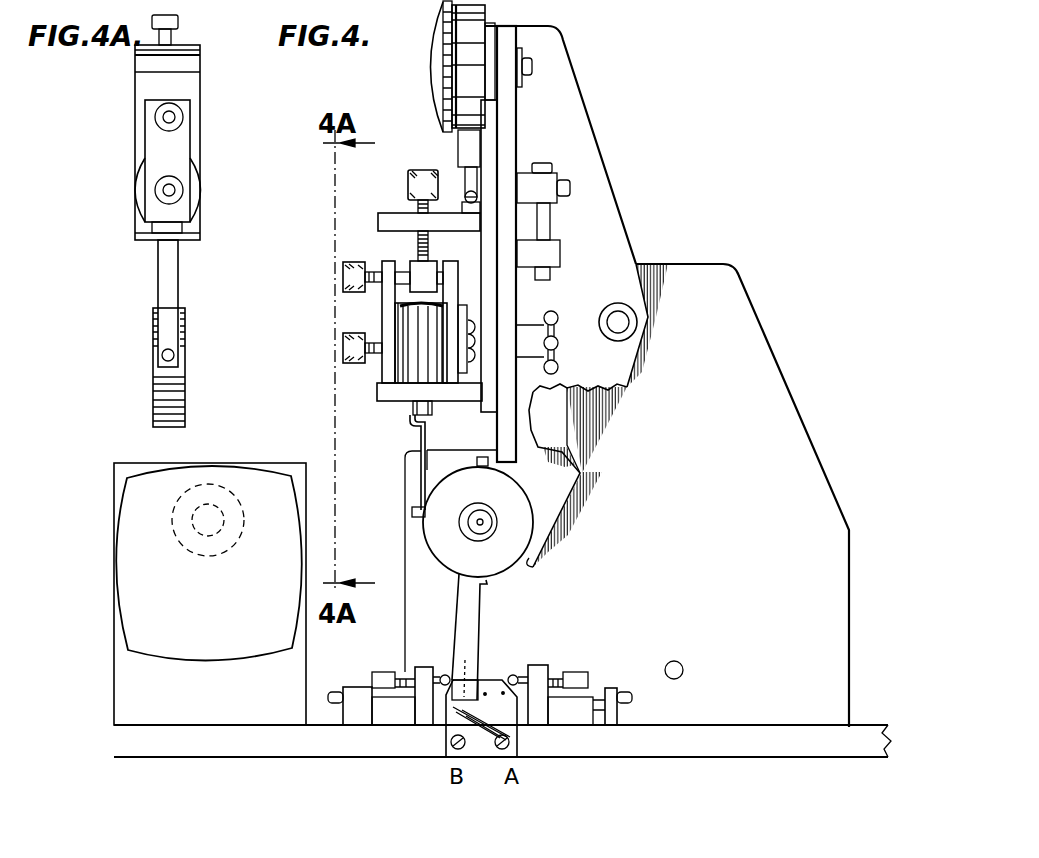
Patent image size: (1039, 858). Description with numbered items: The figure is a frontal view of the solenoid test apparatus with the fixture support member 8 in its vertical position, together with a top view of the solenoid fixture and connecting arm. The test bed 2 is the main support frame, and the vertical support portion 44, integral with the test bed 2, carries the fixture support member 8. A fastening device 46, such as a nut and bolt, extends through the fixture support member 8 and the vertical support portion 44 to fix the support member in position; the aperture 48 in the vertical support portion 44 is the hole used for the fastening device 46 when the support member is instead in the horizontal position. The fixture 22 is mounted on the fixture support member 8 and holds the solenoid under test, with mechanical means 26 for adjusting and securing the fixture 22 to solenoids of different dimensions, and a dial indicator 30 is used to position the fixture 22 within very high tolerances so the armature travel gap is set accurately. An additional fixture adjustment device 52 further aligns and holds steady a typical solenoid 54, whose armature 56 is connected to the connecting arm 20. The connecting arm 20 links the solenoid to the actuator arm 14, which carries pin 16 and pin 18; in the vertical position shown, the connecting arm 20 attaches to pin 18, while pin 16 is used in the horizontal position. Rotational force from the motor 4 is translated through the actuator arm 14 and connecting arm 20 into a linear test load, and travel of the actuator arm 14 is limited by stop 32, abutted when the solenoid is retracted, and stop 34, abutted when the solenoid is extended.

In FIG. 4, the test bed 2 is at (689, 726).
In FIG. 4, the motor 4 is at (270, 514).
In FIG. 4, the fixture support member 8 is at (562, 45).
In FIG. 4, the actuator arm 14 is at (463, 598).
In FIG. 4, the pin 16 is at (482, 456).
In FIG. 4A, the pin 18 is at (172, 361).
In FIG. 4, the pin 18 is at (411, 512).
In FIG. 4A, the connecting arm 20 is at (176, 281).
In FIG. 4, the connecting arm 20 is at (412, 429).
In FIG. 4A, the fixture 22 is at (196, 88).
In FIG. 4, the fixture 22 is at (420, 178).
In FIG. 4A, the mechanical means 26 is at (180, 22).
In FIG. 4, the dial indicator 30 is at (432, 40).
In FIG. 4, the stop 32 is at (446, 674).
In FIG. 4, the stop 34 is at (514, 674).
In FIG. 4, the vertical support portion 44 is at (770, 360).
In FIG. 4, the fastening device 46 is at (614, 333).
In FIG. 4, the aperture 48 is at (682, 664).
In FIG. 4A, the fixture adjustment device 52 is at (180, 146).
In FIG. 4, the fixture adjustment device 52 is at (388, 318).
In FIG. 4A, the solenoid 54 is at (200, 189).
In FIG. 4, the solenoid 54 is at (418, 367).
In FIG. 4, the armature 56 is at (432, 406).